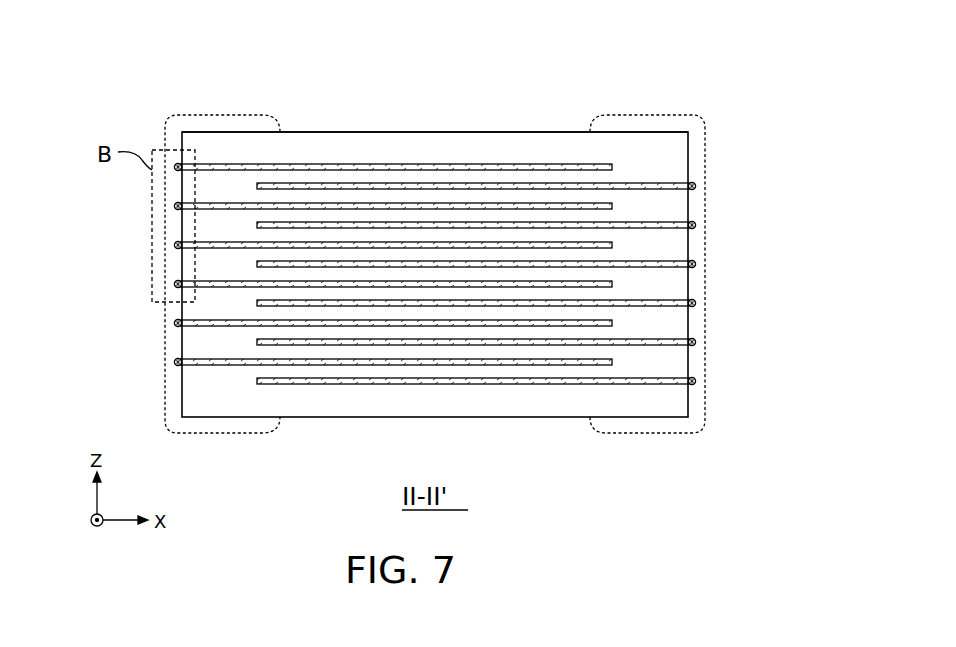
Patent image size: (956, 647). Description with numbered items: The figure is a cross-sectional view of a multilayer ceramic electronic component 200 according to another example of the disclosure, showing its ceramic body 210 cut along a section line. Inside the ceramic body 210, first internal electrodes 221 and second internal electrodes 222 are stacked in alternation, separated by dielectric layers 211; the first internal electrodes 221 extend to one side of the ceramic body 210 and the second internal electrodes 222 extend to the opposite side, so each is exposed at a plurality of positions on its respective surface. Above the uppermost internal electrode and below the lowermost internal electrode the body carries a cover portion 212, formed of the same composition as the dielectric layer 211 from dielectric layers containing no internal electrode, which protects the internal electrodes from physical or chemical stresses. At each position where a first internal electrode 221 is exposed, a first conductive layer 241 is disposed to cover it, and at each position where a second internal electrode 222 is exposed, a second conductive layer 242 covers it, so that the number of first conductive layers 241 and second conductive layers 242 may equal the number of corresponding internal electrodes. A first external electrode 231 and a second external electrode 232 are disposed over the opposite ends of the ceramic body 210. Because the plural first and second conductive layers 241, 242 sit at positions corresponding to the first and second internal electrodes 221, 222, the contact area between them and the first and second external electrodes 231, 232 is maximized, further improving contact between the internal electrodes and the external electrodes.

The multilayer ceramic electronic component 200 is at (356, 26).
The ceramic body 210 is at (435, 269).
The dielectric layer 211 is at (647, 362).
The cover portion 212 is at (518, 148).
The first internal electrode 221 is at (347, 365).
The second internal electrode 222 is at (393, 385).
The first external electrode 231 is at (220, 114).
The second external electrode 232 is at (648, 114).
The first conductive layer 241 is at (174, 208).
The second conductive layer 242 is at (696, 187).